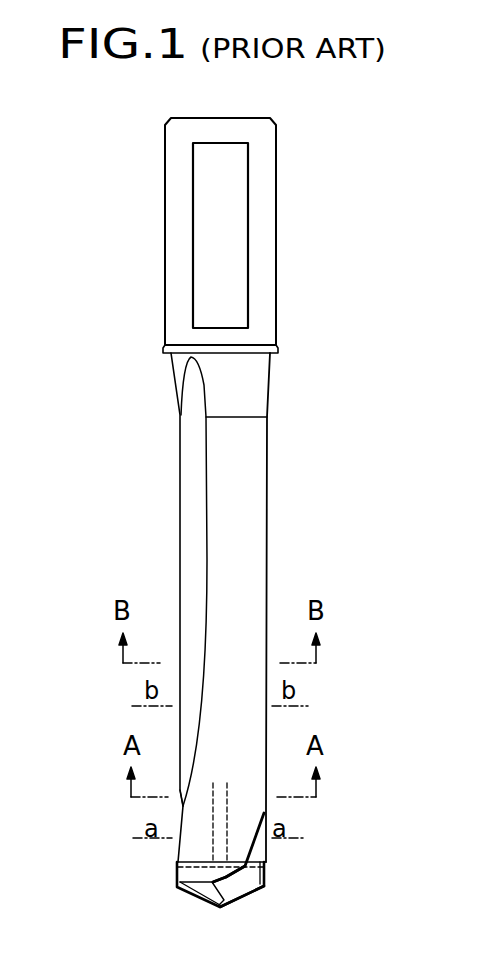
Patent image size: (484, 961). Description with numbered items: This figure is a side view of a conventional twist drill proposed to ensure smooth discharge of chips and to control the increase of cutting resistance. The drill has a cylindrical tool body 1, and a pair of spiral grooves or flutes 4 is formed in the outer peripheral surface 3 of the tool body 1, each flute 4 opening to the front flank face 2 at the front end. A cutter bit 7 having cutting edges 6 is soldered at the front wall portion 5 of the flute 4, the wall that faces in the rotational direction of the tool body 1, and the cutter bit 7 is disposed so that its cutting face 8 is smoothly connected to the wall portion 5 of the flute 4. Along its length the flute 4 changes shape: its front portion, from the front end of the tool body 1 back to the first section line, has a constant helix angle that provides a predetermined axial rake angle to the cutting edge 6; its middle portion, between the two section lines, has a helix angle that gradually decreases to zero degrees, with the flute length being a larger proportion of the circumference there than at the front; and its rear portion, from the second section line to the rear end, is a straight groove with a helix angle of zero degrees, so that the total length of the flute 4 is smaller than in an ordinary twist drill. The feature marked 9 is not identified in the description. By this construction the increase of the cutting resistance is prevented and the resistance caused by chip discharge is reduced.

The tool body 1 is at (178, 507).
The front flank face 2 is at (195, 898).
The outer peripheral surface 3 is at (235, 462).
The flute 4 is at (188, 423).
The front wall portion 5 is at (257, 850).
The cutting edge 6 is at (247, 902).
The cutter bit 7 is at (250, 878).
The cutting face 8 is at (219, 879).
The flute end 9 is at (180, 733).